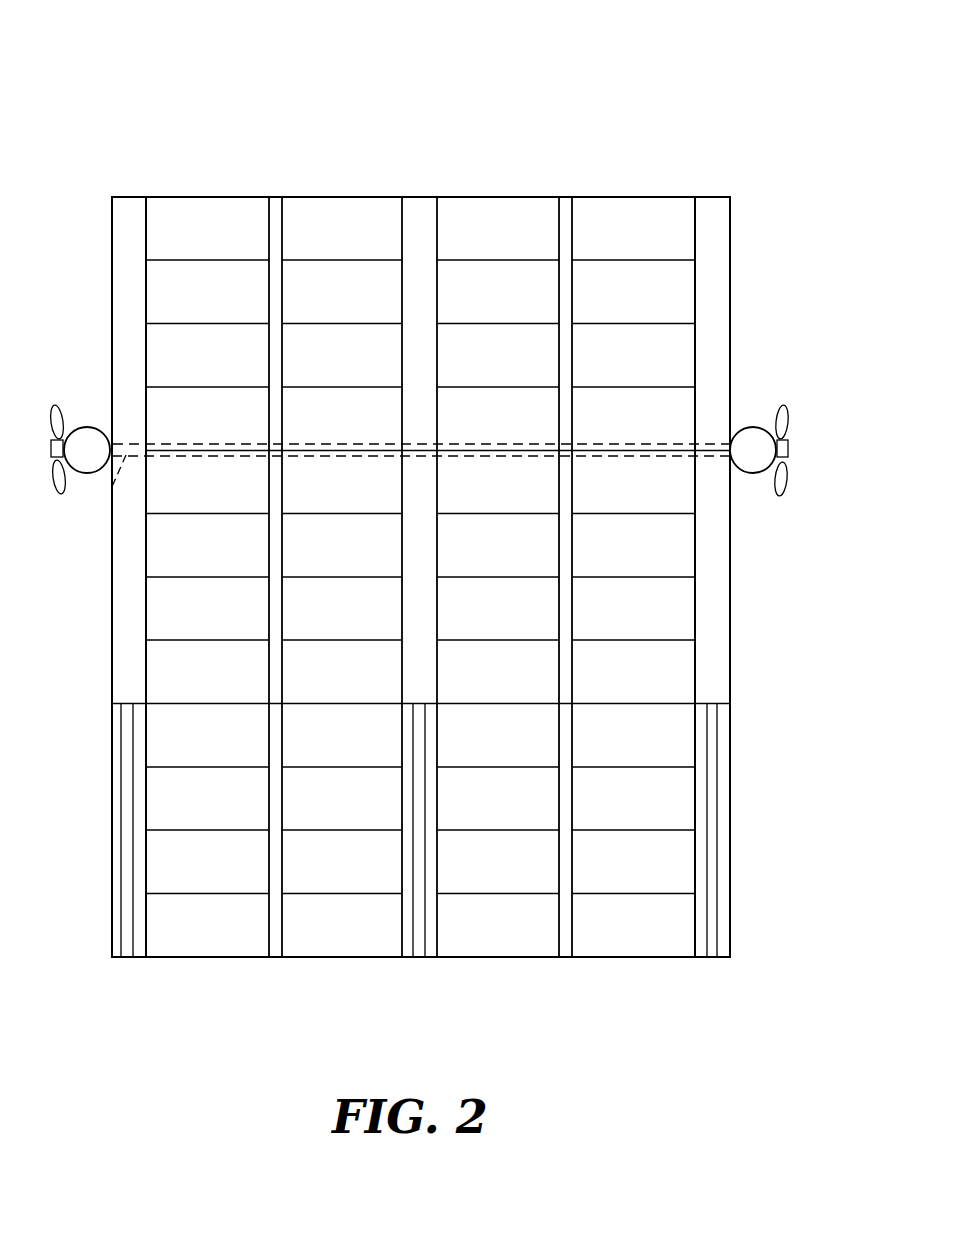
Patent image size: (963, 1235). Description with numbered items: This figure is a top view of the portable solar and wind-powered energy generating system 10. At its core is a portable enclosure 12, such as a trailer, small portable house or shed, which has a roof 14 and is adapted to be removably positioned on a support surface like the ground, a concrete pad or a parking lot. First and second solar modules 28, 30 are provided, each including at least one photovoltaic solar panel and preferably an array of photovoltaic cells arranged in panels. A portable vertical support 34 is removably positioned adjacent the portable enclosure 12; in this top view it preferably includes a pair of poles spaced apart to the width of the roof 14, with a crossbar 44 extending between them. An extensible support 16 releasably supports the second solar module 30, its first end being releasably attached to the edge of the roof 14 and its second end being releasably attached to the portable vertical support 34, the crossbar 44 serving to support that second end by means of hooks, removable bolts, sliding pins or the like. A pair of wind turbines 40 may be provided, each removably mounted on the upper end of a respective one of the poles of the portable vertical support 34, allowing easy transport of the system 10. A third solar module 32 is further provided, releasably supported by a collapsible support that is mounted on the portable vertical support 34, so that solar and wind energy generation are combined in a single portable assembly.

The portable solar and wind-powered energy generating system 10 is at (117, 67).
The portable enclosure 12 is at (289, 986).
The roof 14 is at (407, 958).
The extensible support 16 is at (112, 652).
The first solar module 28 is at (96, 843).
The second solar module 30 is at (741, 630).
The third solar module 32 is at (477, 181).
The portable vertical support 34 is at (87, 427).
The wind turbine 40 is at (423, 402).
The crossbar 44 is at (99, 500).